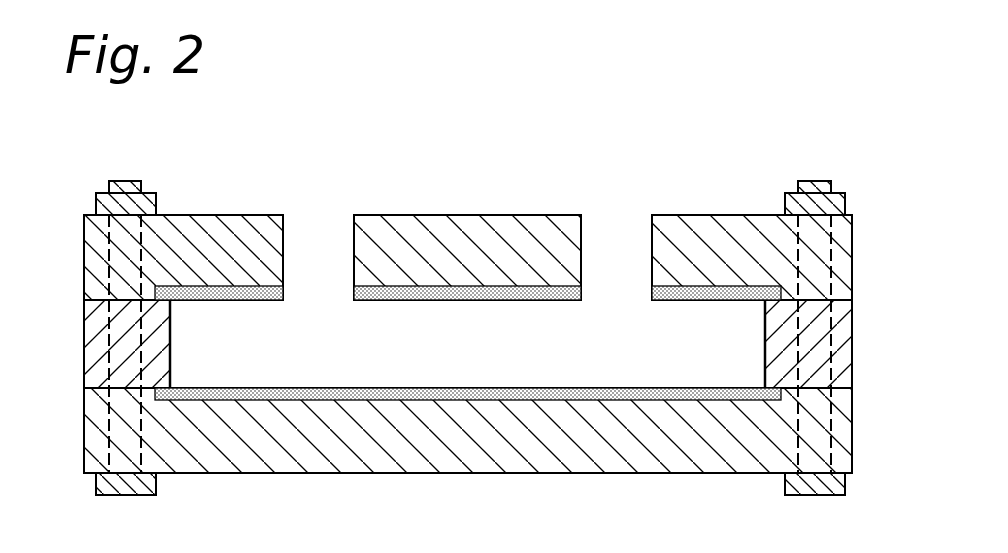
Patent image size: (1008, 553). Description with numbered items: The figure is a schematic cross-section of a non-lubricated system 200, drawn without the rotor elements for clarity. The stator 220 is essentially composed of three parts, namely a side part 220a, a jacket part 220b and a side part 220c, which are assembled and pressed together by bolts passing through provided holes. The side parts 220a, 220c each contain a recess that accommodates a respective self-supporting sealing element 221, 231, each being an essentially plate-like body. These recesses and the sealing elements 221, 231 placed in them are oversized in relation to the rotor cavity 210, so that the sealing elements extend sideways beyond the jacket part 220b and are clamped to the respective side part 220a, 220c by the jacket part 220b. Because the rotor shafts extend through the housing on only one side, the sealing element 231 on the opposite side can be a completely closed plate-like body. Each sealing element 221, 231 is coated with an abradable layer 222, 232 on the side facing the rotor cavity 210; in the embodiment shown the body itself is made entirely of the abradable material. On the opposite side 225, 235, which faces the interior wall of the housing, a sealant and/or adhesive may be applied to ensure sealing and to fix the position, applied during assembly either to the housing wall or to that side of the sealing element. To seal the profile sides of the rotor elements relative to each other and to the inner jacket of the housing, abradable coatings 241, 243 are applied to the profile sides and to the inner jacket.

The non-lubricated system 200 is at (675, 123).
The rotor cavity 210 is at (490, 361).
The stator 220 is at (468, 191).
The side part 220a is at (243, 264).
The jacket part 220b is at (101, 361).
The side part 220c is at (507, 449).
The self-supporting sealing element 221 is at (362, 287).
The abradable layer 222 is at (405, 302).
The opposite side 225 is at (437, 287).
The self-supporting sealing element 231 is at (615, 394).
The abradable layer 232 is at (327, 387).
The opposite side 235 is at (370, 402).
The abradable coating 241 is at (170, 323).
The abradable coating 243 is at (765, 337).